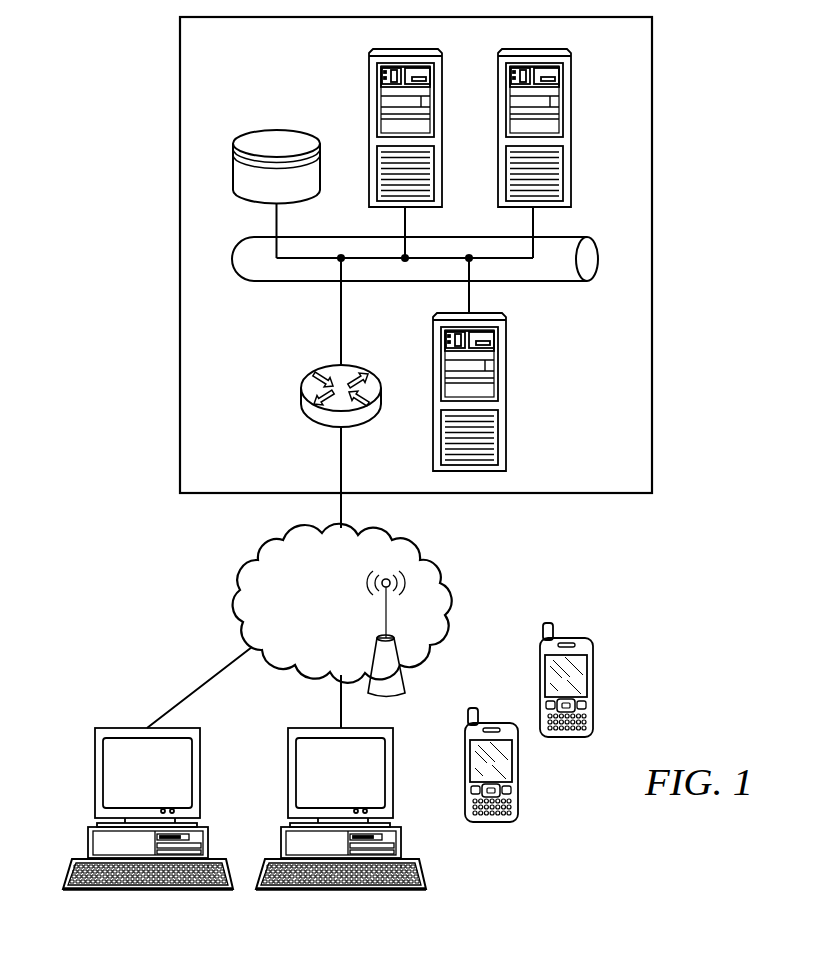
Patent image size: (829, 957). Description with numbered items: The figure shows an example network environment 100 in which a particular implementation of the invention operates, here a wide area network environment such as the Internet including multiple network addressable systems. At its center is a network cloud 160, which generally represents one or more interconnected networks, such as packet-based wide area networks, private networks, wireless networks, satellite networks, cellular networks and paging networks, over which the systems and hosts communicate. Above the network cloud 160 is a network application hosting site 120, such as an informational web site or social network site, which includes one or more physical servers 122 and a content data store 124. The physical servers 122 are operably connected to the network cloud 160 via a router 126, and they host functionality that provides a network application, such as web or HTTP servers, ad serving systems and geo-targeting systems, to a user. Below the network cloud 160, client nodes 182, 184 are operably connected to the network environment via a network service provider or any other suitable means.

The network environment 100 is at (106, 101).
The network application hosting site 120 is at (171, 215).
The physical servers 122 is at (369, 100).
The content data store 124 is at (270, 130).
The router 126 is at (301, 398).
The network cloud 160 is at (238, 600).
The client node 182 is at (95, 773).
The client node 184 is at (518, 767).